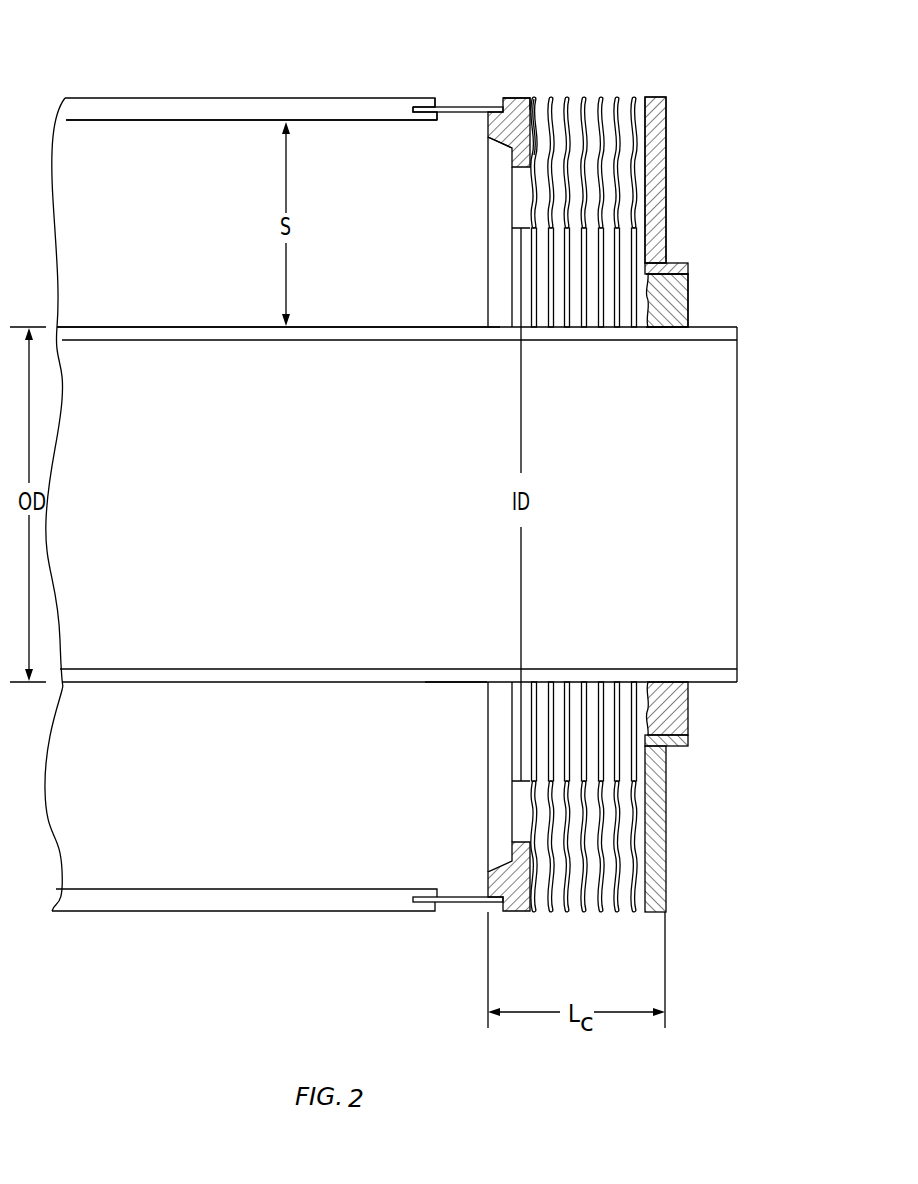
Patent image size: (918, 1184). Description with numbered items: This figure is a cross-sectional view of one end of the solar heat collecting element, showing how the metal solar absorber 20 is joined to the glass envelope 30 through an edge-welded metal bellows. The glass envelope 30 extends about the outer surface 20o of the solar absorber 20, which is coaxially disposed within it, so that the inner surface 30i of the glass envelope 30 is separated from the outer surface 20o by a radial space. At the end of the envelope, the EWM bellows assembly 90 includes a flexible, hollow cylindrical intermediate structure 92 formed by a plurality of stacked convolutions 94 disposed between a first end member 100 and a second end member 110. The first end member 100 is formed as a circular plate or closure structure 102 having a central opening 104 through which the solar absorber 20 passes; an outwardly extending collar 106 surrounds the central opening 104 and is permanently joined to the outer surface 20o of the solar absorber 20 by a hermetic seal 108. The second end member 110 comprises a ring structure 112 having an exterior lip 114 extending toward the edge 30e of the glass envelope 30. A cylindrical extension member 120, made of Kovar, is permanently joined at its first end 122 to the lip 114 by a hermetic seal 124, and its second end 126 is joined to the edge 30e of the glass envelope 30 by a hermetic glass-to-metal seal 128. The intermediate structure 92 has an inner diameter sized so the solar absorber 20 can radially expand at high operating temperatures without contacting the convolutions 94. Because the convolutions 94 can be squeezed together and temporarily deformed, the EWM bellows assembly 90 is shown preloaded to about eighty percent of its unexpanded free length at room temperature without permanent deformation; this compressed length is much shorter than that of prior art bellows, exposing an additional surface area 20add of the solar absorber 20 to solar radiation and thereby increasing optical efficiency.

The solar absorber 20 is at (738, 334).
The outer surface of the solar absorber 20o is at (190, 327).
The additional surface area of the solar absorber 20add is at (487, 684).
The glass envelope 30 is at (314, 97).
The inner surface of the glass envelope 30i is at (206, 121).
The edge of the glass envelope 30e is at (439, 106).
The EWM bellows assembly 90 is at (730, 183).
The intermediate structure 92 is at (638, 927).
The convolutions 94 is at (619, 97).
The first end member 100 is at (656, 97).
The closure structure 102 is at (660, 217).
The central opening 104 is at (730, 294).
The collar 106 is at (683, 270).
The hermetic seal 108 is at (678, 310).
The second end member 110 is at (488, 807).
The ring structure 112 is at (535, 98).
The lip 114 is at (498, 887).
The extension member 120 is at (460, 113).
The first end of the extension member 122 is at (506, 98).
The hermetic seal 124 is at (490, 140).
The second end of the extension member 126 is at (412, 108).
The hermetic glass-to-metal seal 128 is at (423, 105).